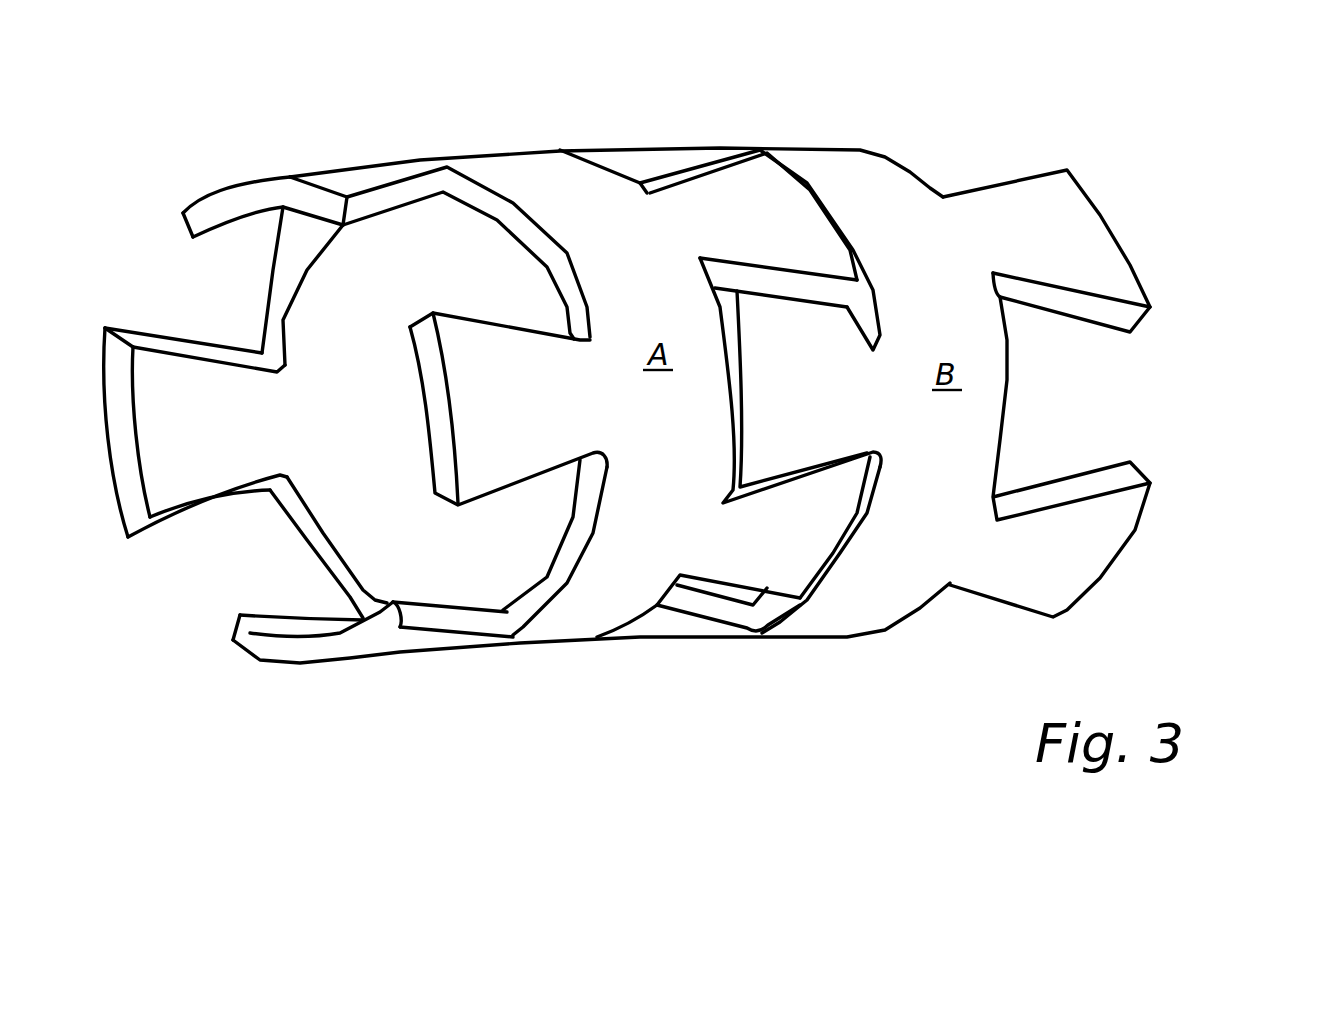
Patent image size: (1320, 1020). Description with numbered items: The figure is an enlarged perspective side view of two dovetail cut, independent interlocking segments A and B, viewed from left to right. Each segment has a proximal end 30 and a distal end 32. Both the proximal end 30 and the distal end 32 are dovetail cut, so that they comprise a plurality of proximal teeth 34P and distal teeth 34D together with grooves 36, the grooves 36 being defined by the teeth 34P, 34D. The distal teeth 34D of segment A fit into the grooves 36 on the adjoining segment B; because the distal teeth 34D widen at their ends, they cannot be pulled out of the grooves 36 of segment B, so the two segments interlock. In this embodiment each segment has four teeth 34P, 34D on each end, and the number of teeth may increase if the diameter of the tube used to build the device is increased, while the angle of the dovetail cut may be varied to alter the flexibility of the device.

The proximal end 30 is at (705, 402).
The distal end 32 is at (771, 405).
The proximal teeth 34P is at (272, 175).
The distal teeth 34D is at (765, 219).
The grooves 36 is at (256, 232).